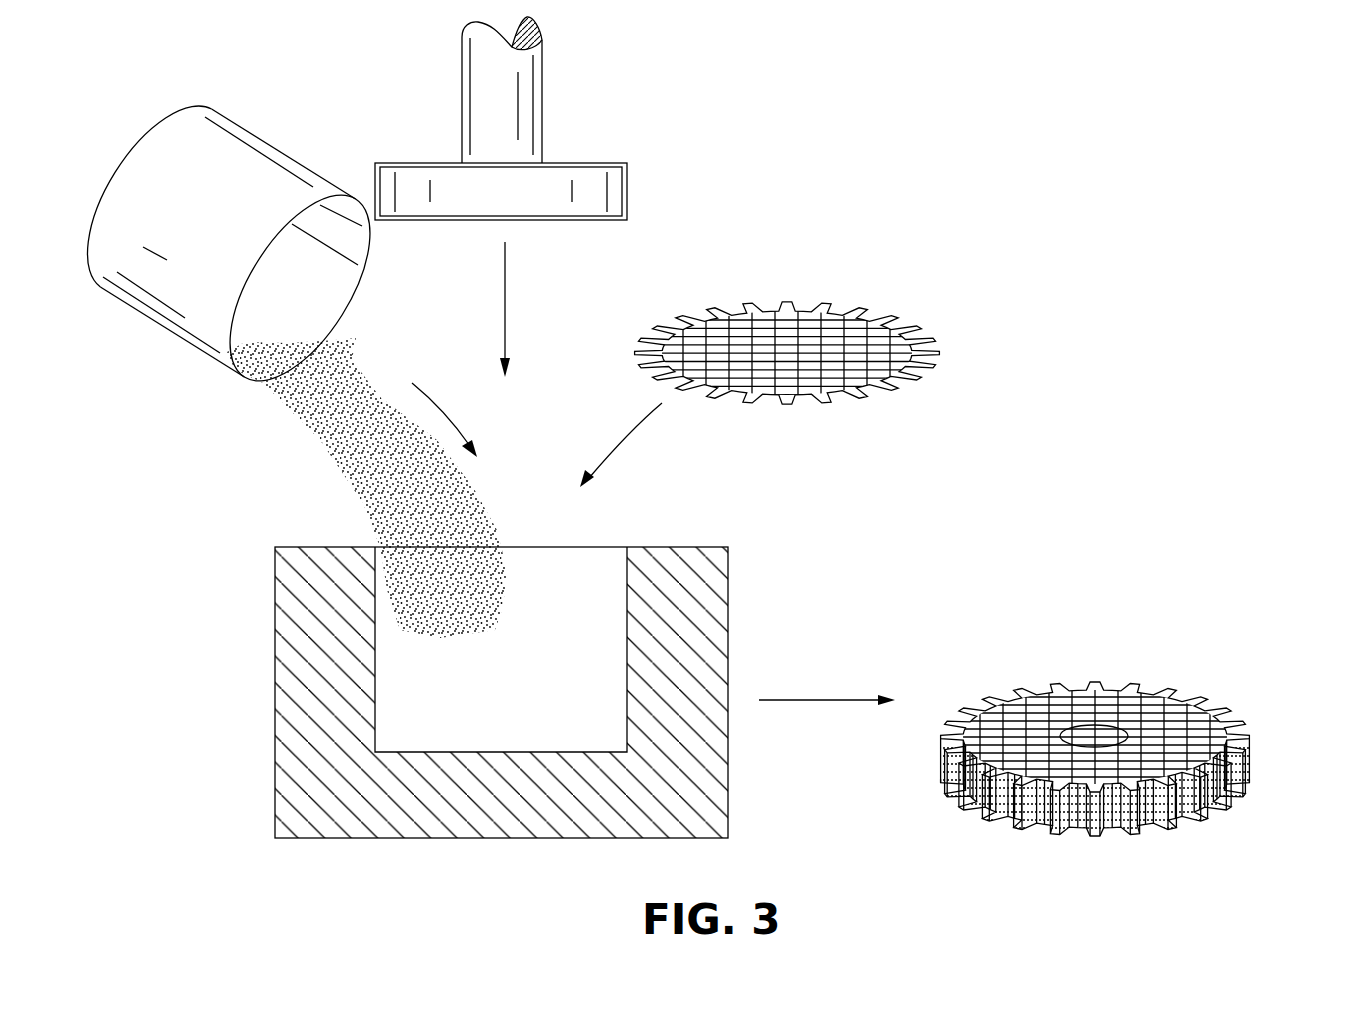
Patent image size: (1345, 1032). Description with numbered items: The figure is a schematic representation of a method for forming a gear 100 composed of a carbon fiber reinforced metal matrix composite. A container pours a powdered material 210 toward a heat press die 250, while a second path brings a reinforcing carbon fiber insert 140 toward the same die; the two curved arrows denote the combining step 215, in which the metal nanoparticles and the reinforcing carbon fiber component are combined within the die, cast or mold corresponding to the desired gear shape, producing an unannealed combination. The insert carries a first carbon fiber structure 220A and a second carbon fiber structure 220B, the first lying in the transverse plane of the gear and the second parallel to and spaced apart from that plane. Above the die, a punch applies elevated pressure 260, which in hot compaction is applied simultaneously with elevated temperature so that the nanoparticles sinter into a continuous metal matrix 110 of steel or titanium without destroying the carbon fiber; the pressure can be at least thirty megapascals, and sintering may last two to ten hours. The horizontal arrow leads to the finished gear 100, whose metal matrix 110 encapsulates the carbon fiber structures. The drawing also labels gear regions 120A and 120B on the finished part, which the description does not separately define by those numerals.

The gear 100 is at (1126, 685).
The continuous metal matrix 110 is at (1222, 777).
The first face of gear 120A is at (986, 726).
The second face of gear 120B is at (1168, 718).
The insert core 140 is at (787, 352).
The powder material 210 is at (363, 383).
The combining step 215 is at (447, 407).
The first carbon fiber structure 220A is at (723, 412).
The second carbon fiber structure 220B is at (836, 307).
The heat press die 250 is at (275, 698).
The elevated pressure 260 is at (505, 294).